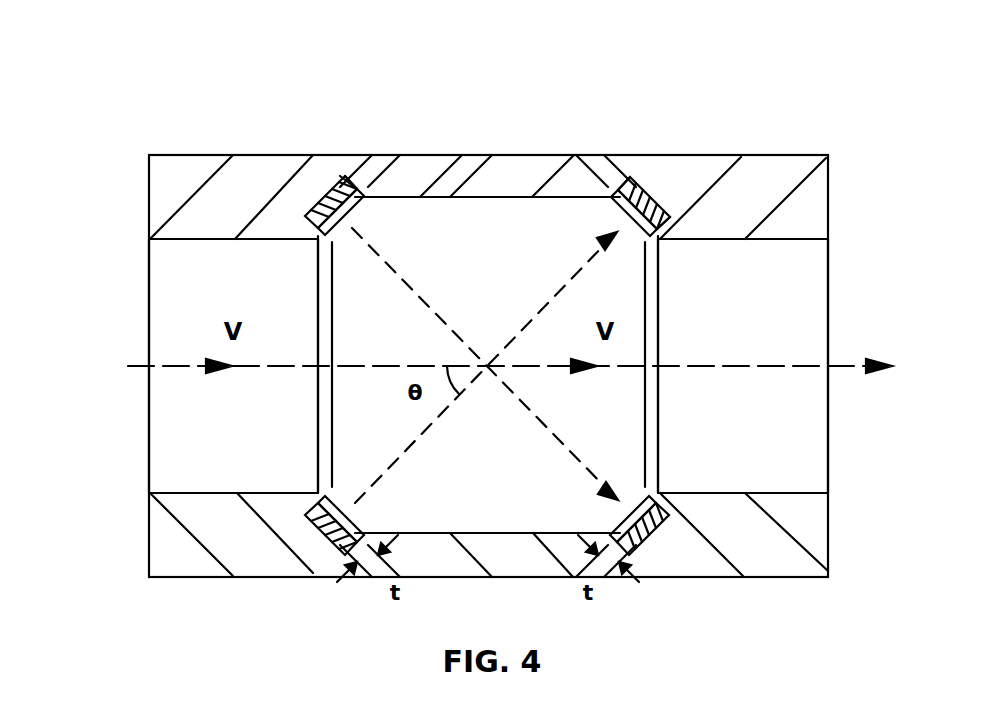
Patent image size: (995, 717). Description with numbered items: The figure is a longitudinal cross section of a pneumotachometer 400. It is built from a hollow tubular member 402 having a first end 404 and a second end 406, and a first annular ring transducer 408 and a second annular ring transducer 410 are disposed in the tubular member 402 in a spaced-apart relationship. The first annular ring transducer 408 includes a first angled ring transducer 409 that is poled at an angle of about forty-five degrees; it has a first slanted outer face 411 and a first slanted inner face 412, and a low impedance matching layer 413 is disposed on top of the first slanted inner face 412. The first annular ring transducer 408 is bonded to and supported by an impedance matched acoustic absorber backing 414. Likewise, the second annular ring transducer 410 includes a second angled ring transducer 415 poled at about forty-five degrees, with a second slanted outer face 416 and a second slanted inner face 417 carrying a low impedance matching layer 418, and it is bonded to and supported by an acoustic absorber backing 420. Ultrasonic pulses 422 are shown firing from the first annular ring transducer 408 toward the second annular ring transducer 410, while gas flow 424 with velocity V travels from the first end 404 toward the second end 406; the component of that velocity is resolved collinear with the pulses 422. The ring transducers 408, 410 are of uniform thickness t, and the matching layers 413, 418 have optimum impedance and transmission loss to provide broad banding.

The pneumotachometer 400 is at (168, 74).
The hollow tubular member 402 is at (202, 156).
The first end 404 is at (142, 278).
The second end 406 is at (828, 284).
The first annular ring transducer 408 is at (318, 326).
The first angled ring transducer 409 is at (318, 176).
The second annular ring transducer 410 is at (659, 305).
The first slanted outer face 411 is at (340, 178).
The first slanted inner face 412 is at (363, 176).
The low impedance matching layer 413 is at (358, 208).
The acoustic absorber backing 414 is at (312, 546).
The second angled ring transducer 415 is at (672, 193).
The second slanted outer face 416 is at (650, 184).
The second slanted inner face 417 is at (622, 180).
The low impedance matching layer 418 is at (608, 212).
The acoustic absorber backing 420 is at (650, 558).
The ultrasonic pulses 422 is at (457, 333).
The gas flow 424 is at (137, 365).